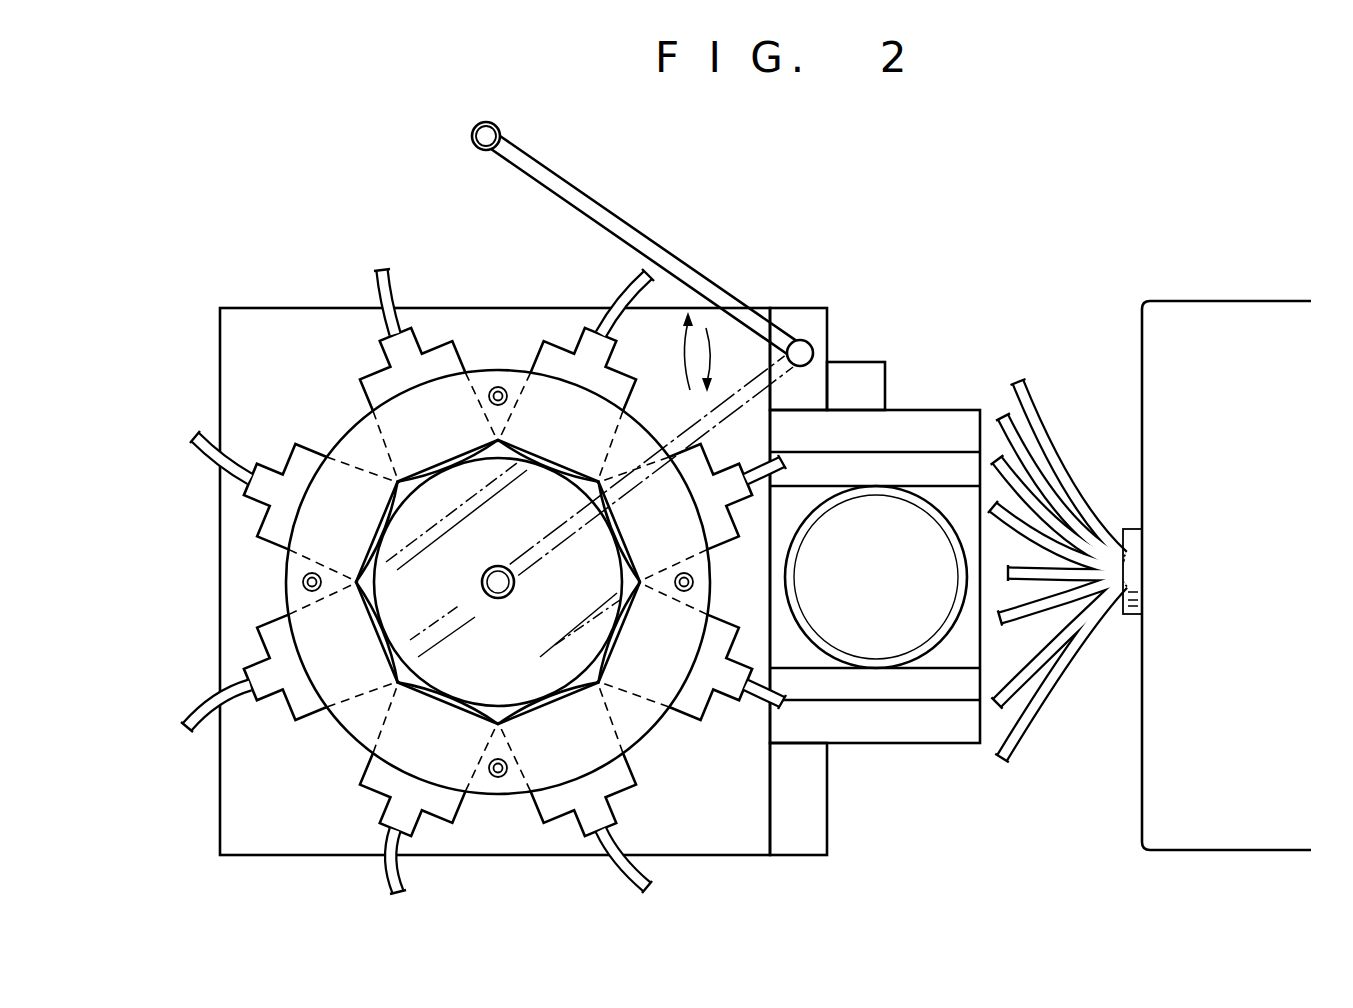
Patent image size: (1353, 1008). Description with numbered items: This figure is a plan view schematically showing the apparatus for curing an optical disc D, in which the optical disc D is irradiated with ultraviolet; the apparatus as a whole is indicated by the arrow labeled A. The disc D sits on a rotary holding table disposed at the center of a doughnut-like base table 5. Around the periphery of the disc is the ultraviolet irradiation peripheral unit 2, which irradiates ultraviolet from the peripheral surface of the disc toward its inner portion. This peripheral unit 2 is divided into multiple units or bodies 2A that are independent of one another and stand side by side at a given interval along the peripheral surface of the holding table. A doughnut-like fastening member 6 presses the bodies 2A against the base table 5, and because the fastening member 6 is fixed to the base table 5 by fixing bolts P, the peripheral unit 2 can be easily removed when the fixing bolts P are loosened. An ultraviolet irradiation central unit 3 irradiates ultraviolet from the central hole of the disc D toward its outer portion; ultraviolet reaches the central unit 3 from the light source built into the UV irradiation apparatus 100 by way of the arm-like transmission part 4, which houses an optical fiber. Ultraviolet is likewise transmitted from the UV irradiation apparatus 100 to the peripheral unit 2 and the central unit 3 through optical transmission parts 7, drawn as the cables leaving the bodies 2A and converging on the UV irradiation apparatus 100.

The ultraviolet irradiation peripheral unit 2 is at (255, 636).
The units or bodies 2A is at (305, 450).
The ultraviolet irradiation central unit 3 is at (478, 148).
The arm-like transmission part 4 is at (603, 205).
The base table 5 is at (727, 826).
The fastening member 6 is at (355, 720).
The optical transmission parts 7 is at (620, 878).
The fixing bolts P is at (500, 777).
The optical disc D is at (483, 674).
The measuring apparatus A is at (1045, 256).
The UV irradiation apparatus 100 is at (1229, 767).